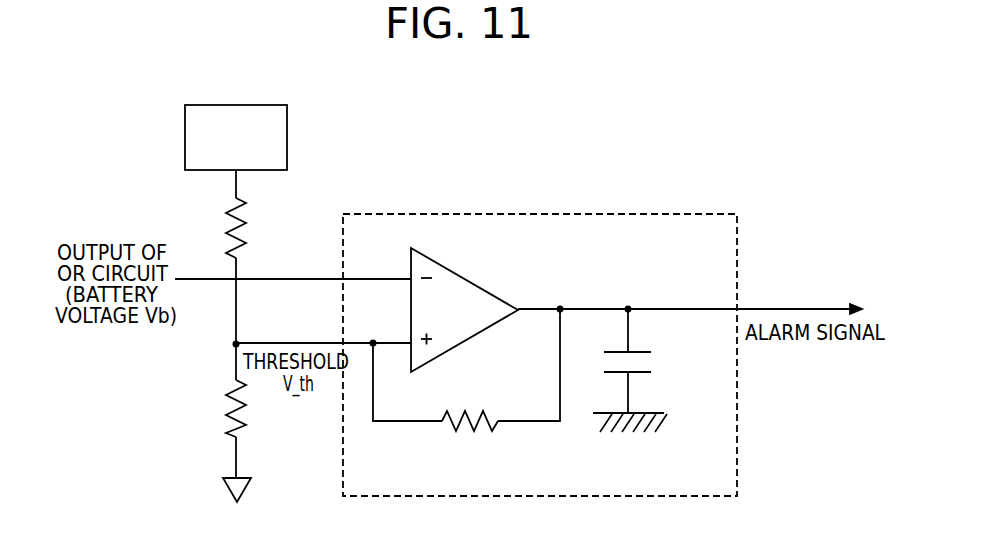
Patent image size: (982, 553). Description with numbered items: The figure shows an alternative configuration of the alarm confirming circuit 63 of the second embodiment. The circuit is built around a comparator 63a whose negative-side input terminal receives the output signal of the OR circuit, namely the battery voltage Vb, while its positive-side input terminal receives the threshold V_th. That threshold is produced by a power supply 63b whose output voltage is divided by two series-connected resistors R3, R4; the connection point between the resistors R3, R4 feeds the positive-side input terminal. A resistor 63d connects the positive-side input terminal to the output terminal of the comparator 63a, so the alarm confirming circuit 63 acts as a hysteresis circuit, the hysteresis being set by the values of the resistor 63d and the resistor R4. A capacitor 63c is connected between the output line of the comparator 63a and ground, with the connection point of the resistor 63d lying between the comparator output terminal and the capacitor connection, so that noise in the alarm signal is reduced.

The alarm confirming circuit 63 is at (539, 214).
The comparator 63a is at (466, 278).
The power supply 63b is at (185, 142).
The capacitor 63c is at (650, 362).
The resistor 63d is at (462, 432).
The resistor R3 is at (224, 224).
The resistor R4 is at (222, 404).